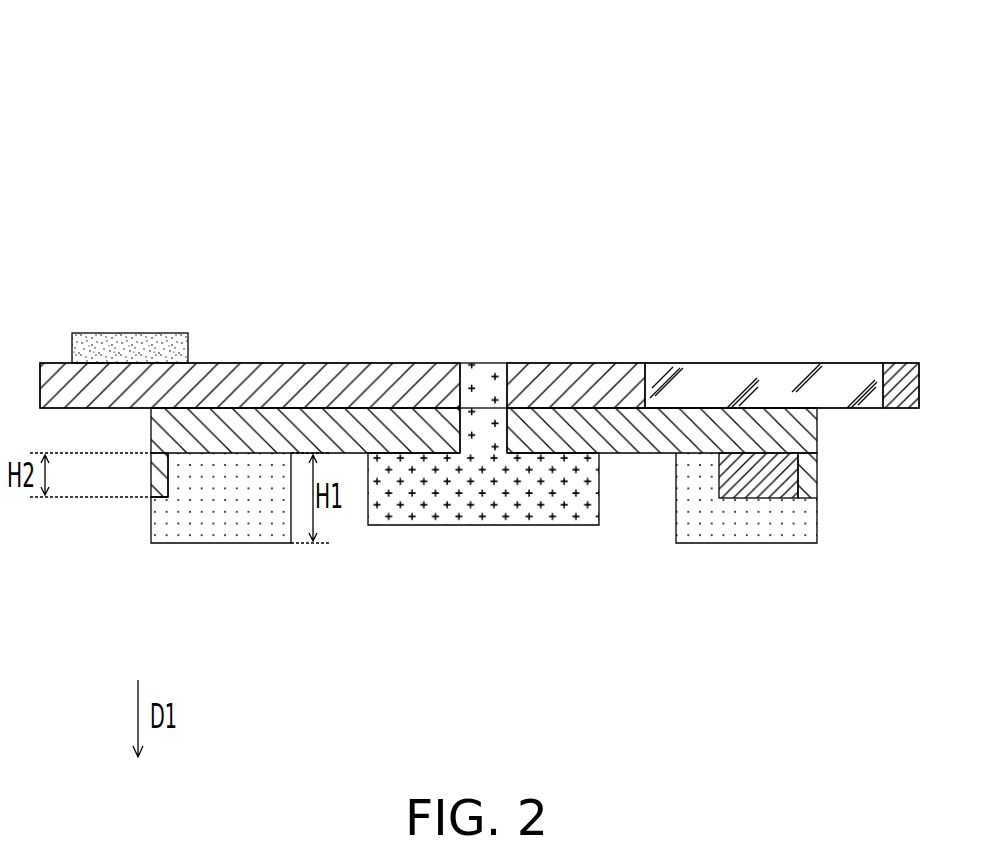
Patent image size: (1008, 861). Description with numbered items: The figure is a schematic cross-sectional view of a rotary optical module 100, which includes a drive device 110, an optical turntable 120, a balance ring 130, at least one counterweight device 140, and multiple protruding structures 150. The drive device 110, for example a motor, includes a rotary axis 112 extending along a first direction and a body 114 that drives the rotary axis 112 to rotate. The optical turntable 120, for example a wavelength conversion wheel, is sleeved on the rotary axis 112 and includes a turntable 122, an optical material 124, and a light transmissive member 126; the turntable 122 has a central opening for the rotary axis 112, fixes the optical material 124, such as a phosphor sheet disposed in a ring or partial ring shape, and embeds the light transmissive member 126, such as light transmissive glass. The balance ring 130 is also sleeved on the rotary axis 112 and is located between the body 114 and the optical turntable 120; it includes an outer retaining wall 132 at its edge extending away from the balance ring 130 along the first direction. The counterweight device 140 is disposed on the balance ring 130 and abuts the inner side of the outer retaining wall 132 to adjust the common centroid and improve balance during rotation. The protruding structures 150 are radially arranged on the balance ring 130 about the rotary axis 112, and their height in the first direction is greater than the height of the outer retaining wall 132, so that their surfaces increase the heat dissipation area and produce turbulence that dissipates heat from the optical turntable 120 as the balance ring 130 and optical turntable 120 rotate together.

The rotary optical module 100 is at (907, 712).
The drive device 110 is at (128, 20).
The rotary axis 112 is at (483, 378).
The body 114 is at (492, 510).
The optical turntable 120 is at (270, 13).
The turntable 122 is at (288, 390).
The optical material 124 is at (130, 350).
The light transmissive member 126 is at (723, 378).
The balance ring 130 is at (348, 447).
The outer retaining wall 132 is at (160, 470).
The counterweight device 140 is at (790, 487).
The protruding structures 150 is at (193, 530).